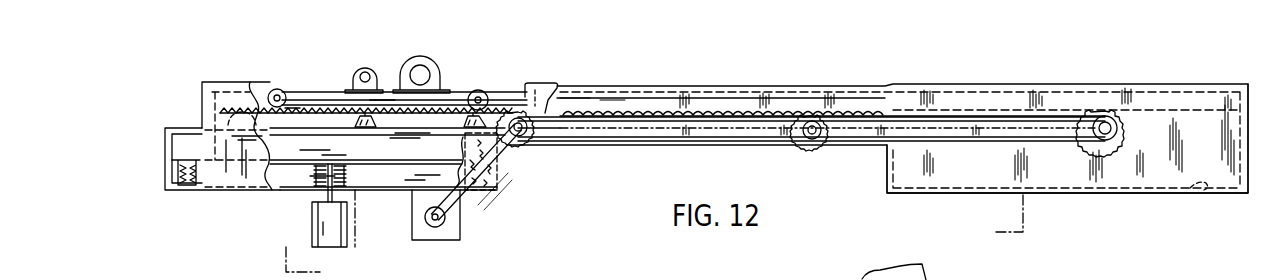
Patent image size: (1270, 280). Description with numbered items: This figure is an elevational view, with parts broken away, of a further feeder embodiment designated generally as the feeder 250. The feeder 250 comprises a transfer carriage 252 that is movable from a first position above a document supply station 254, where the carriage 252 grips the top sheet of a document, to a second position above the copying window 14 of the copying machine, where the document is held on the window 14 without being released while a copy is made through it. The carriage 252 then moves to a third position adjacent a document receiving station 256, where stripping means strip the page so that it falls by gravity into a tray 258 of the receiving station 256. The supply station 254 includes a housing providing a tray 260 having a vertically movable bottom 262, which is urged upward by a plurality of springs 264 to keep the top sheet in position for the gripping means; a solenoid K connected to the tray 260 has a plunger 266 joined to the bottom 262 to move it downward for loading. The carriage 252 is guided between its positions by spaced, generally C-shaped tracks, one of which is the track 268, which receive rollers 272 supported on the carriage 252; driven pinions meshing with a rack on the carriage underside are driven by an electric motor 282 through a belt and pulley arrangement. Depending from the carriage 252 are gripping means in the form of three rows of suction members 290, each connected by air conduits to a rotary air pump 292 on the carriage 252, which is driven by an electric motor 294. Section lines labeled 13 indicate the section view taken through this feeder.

The feeder 250 is at (563, 66).
The transfer carriage 252 is at (467, 97).
The document supply station 254 is at (254, 80).
The document receiving station 256 is at (1132, 85).
The tray 258 is at (1204, 192).
The tray 260 is at (166, 178).
The tray bottom 262 is at (368, 162).
The springs 264 is at (200, 180).
The plunger 266 is at (322, 190).
The track 268 is at (860, 87).
The rollers 272 is at (288, 97).
The electric motor 282 is at (458, 234).
The suction members 290 is at (380, 116).
The rotary air pump 292 is at (430, 58).
The electric motor 294 is at (366, 66).
The copying window 14 is at (868, 146).
The section line 13- 13 is at (500, 72).
The solenoid K is at (315, 226).